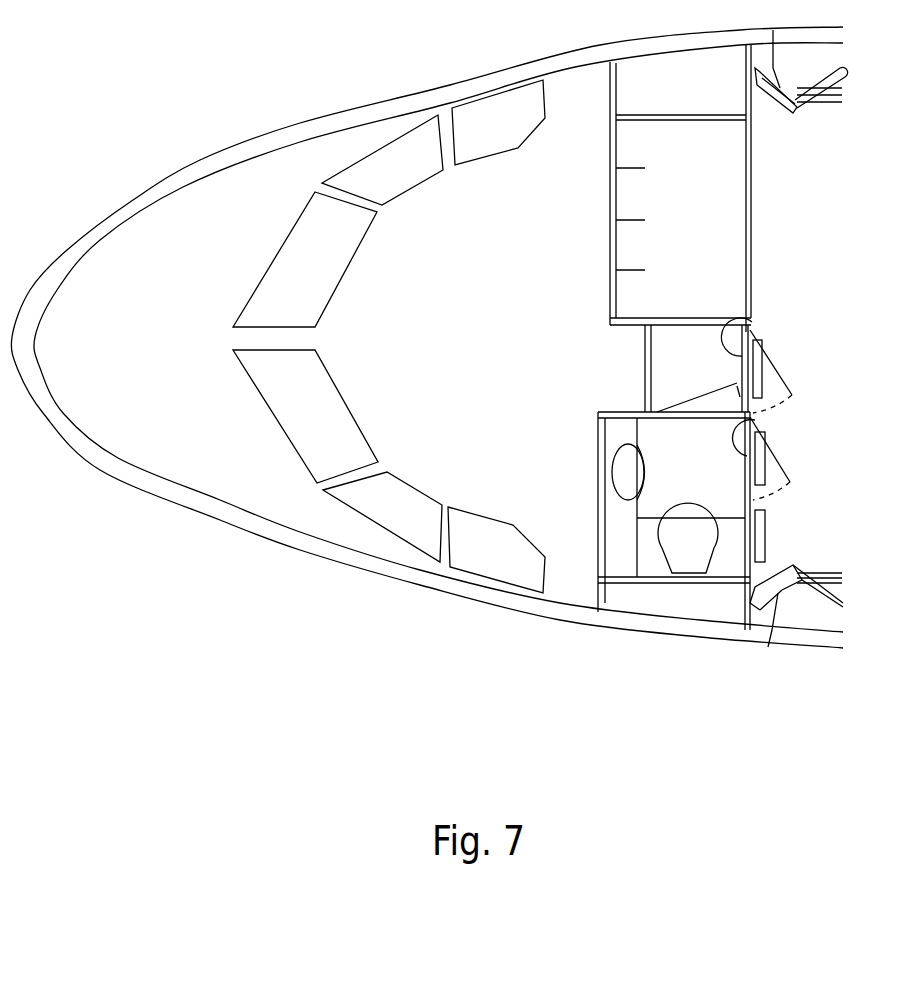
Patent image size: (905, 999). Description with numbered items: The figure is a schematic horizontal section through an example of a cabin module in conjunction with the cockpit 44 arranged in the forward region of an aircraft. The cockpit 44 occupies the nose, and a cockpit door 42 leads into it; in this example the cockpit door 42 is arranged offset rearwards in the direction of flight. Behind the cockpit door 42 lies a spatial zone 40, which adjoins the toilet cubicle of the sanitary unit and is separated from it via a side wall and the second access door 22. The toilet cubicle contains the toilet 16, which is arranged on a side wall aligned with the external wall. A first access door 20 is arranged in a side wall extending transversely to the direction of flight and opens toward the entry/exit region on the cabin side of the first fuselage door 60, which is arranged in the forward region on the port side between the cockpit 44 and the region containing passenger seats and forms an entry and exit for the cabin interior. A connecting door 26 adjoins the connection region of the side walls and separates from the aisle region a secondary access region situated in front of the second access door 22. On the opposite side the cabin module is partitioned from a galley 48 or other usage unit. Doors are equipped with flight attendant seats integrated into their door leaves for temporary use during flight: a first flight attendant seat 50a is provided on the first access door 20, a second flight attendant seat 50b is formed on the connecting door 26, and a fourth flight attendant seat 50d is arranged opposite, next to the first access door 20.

The toilet 16 is at (688, 555).
The first access door 20 is at (765, 414).
The second access door 22 is at (705, 418).
The connecting door 26 is at (745, 308).
The spatial zone 40 is at (708, 370).
The cockpit door 42 is at (643, 352).
The cockpit 44 is at (503, 370).
The galley 48 is at (737, 218).
The first flight attendant seat 50a is at (768, 470).
The second flight attendant seat 50b is at (760, 375).
The fourth flight attendant seat 50d is at (765, 537).
The first fuselage door 60 is at (797, 672).